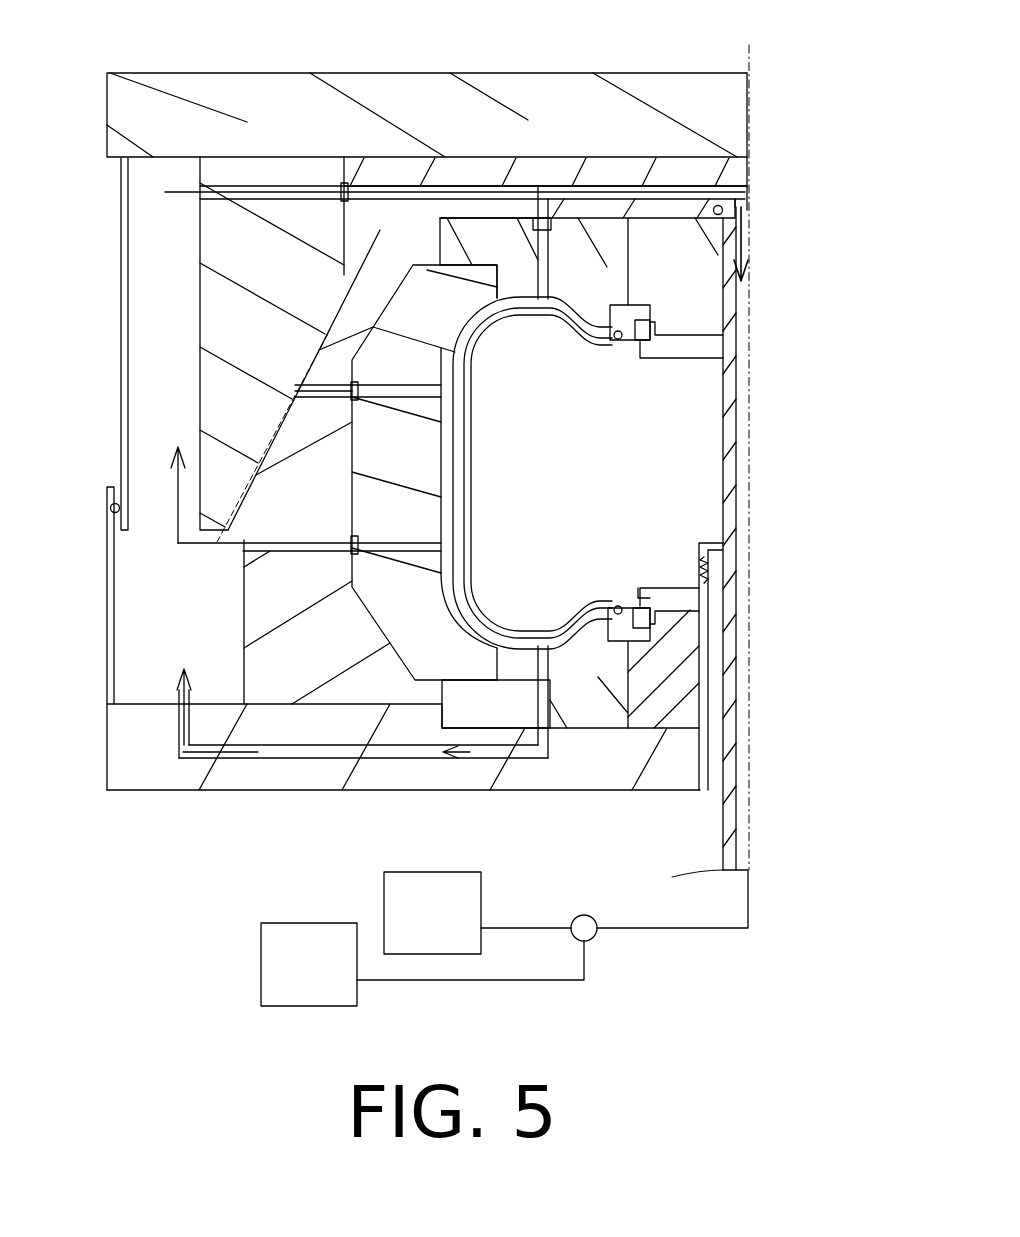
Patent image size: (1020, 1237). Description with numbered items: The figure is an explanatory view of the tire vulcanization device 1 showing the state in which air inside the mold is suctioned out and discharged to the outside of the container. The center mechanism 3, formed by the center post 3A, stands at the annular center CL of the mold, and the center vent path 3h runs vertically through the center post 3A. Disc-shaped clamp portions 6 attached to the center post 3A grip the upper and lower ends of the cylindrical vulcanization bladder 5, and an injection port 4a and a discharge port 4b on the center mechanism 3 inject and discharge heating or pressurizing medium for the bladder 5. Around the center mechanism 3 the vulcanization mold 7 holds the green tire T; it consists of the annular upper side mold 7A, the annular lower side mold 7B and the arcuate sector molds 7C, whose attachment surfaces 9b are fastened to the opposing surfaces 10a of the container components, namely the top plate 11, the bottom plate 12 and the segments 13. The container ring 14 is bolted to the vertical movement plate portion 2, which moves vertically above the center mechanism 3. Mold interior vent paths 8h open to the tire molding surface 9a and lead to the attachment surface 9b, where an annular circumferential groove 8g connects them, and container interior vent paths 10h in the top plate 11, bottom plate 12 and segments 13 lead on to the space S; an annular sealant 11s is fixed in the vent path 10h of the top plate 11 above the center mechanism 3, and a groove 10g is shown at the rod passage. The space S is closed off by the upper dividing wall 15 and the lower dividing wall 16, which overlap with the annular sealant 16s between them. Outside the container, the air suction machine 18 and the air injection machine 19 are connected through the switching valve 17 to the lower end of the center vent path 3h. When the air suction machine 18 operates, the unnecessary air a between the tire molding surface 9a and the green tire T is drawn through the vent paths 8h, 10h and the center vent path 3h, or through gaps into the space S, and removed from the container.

The tire vulcanization device 1 is at (757, 117).
The vertical movement plate portion 2 is at (522, 71).
The center mechanism 3 is at (707, 604).
The center post 3A is at (708, 556).
The center vent path 3h is at (750, 478).
The injection port 4a is at (700, 560).
The discharge port 4b is at (698, 585).
The vulcanization bladder 5 is at (532, 473).
The clamp portion 6 is at (683, 350).
The vulcanization mold 7 is at (406, 455).
The upper side mold 7A is at (588, 313).
The lower side mold 7B is at (555, 630).
The sector mold 7C is at (428, 482).
The circumferential groove 8g is at (555, 258).
The mold interior vent path 8h is at (545, 263).
The tire molding surface 9a is at (512, 300).
The attachment surface 9b is at (525, 210).
The opposing surface 10a is at (591, 221).
The groove 10g is at (338, 186).
The container interior vent path 10h is at (612, 205).
The top plate 11 is at (545, 478).
The annular sealant 11s is at (712, 221).
The bottom plate 12 is at (243, 772).
The segment 13 is at (258, 625).
The container ring 14 is at (200, 335).
The upper dividing wall 15 is at (120, 362).
The lower dividing wall 16 is at (84, 605).
The annular sealant 16s is at (112, 497).
The switching valve 17 is at (583, 913).
The air suction machine 18 is at (425, 885).
The air injection machine 19 is at (305, 932).
The unnecessary air a is at (748, 222).
The space S is at (135, 222).
The green tire T is at (452, 532).
The annular center CL is at (742, 443).